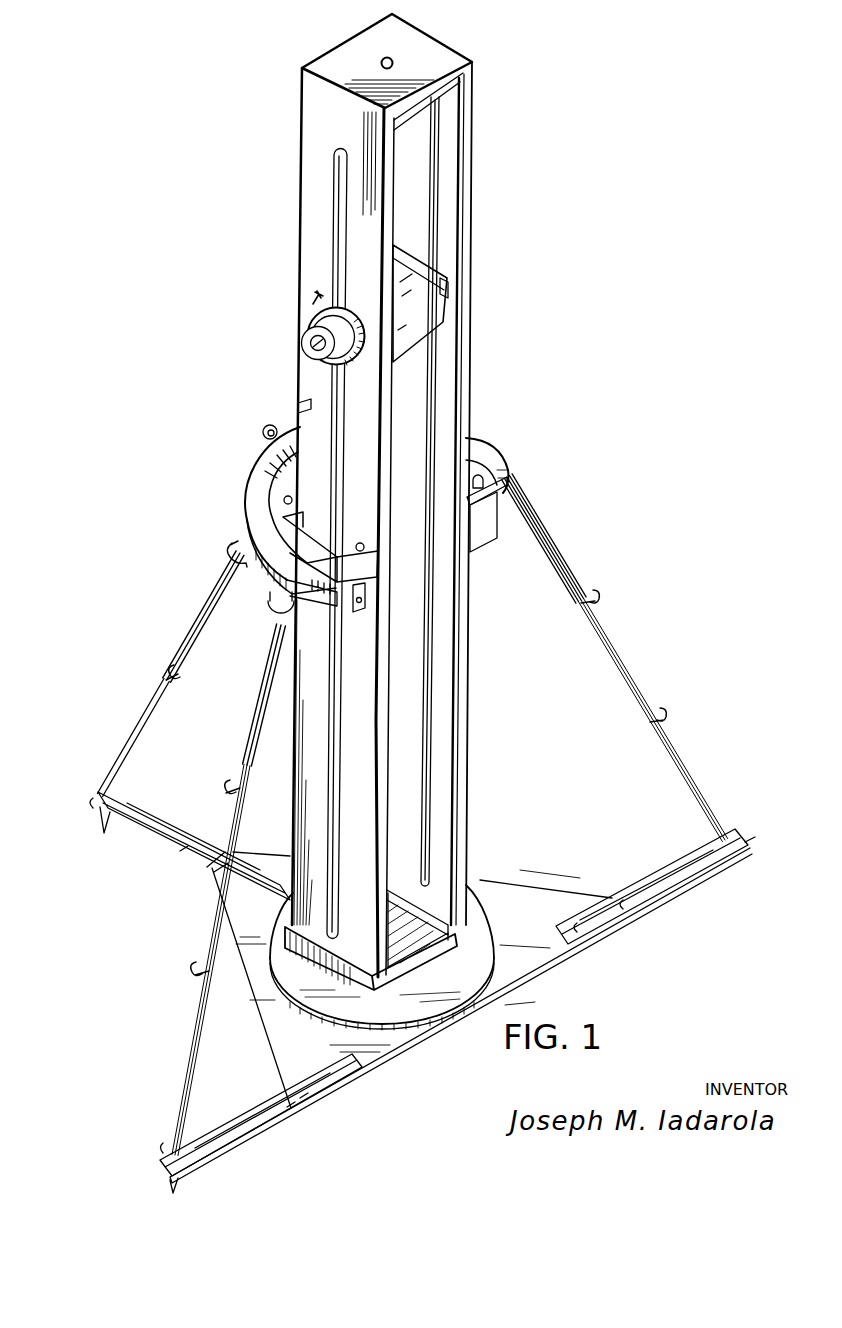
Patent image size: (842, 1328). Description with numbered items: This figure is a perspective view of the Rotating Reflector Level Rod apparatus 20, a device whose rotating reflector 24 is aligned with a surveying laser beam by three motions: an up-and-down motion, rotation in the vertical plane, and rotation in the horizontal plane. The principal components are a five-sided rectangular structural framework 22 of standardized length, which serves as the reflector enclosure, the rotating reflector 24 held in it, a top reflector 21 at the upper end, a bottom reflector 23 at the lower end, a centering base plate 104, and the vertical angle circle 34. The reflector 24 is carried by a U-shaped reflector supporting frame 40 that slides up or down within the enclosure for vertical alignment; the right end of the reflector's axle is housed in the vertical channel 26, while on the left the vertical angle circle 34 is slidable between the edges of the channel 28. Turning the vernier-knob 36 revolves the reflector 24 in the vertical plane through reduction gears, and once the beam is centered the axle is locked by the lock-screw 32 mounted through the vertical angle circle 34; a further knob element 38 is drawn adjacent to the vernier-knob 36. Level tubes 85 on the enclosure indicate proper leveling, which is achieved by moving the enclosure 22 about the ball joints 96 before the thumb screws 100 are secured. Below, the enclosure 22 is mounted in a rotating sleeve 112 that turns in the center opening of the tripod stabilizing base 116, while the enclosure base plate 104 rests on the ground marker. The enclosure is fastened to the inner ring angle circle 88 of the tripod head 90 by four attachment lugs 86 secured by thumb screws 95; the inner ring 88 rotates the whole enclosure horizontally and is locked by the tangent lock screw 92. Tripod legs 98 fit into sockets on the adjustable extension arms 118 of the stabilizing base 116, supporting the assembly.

The Rotating Reflector Level Rod apparatus 20 is at (522, 190).
The top reflector 21 is at (452, 90).
The structural framework 22 is at (333, 113).
The bottom reflector 23 is at (437, 927).
The rotating reflector 24 is at (417, 317).
The vertical channel 26 is at (430, 183).
The channel 28 is at (337, 176).
The lock-screw 32 is at (315, 298).
The vertical angle circle 34 is at (333, 315).
The vernier-knob 36 is at (313, 332).
The center screw 38 is at (307, 347).
The reflector supporting frame 40 is at (447, 282).
The level tubes 85 is at (307, 408).
The attachment lugs 86 is at (373, 603).
The inner ring angle circle 88 is at (283, 488).
The tripod head 90 is at (252, 530).
The tangent lock screw 92 is at (263, 432).
The thumb screws 95 is at (291, 497).
The ball joints 96 is at (273, 620).
The tripod legs 98 is at (210, 628).
The thumb screws 100 is at (592, 600).
The centering base plate 104 is at (413, 967).
The rotating sleeve 112 is at (325, 955).
The tripod stabilizing base 116 is at (530, 948).
The extension arms 118 is at (187, 850).